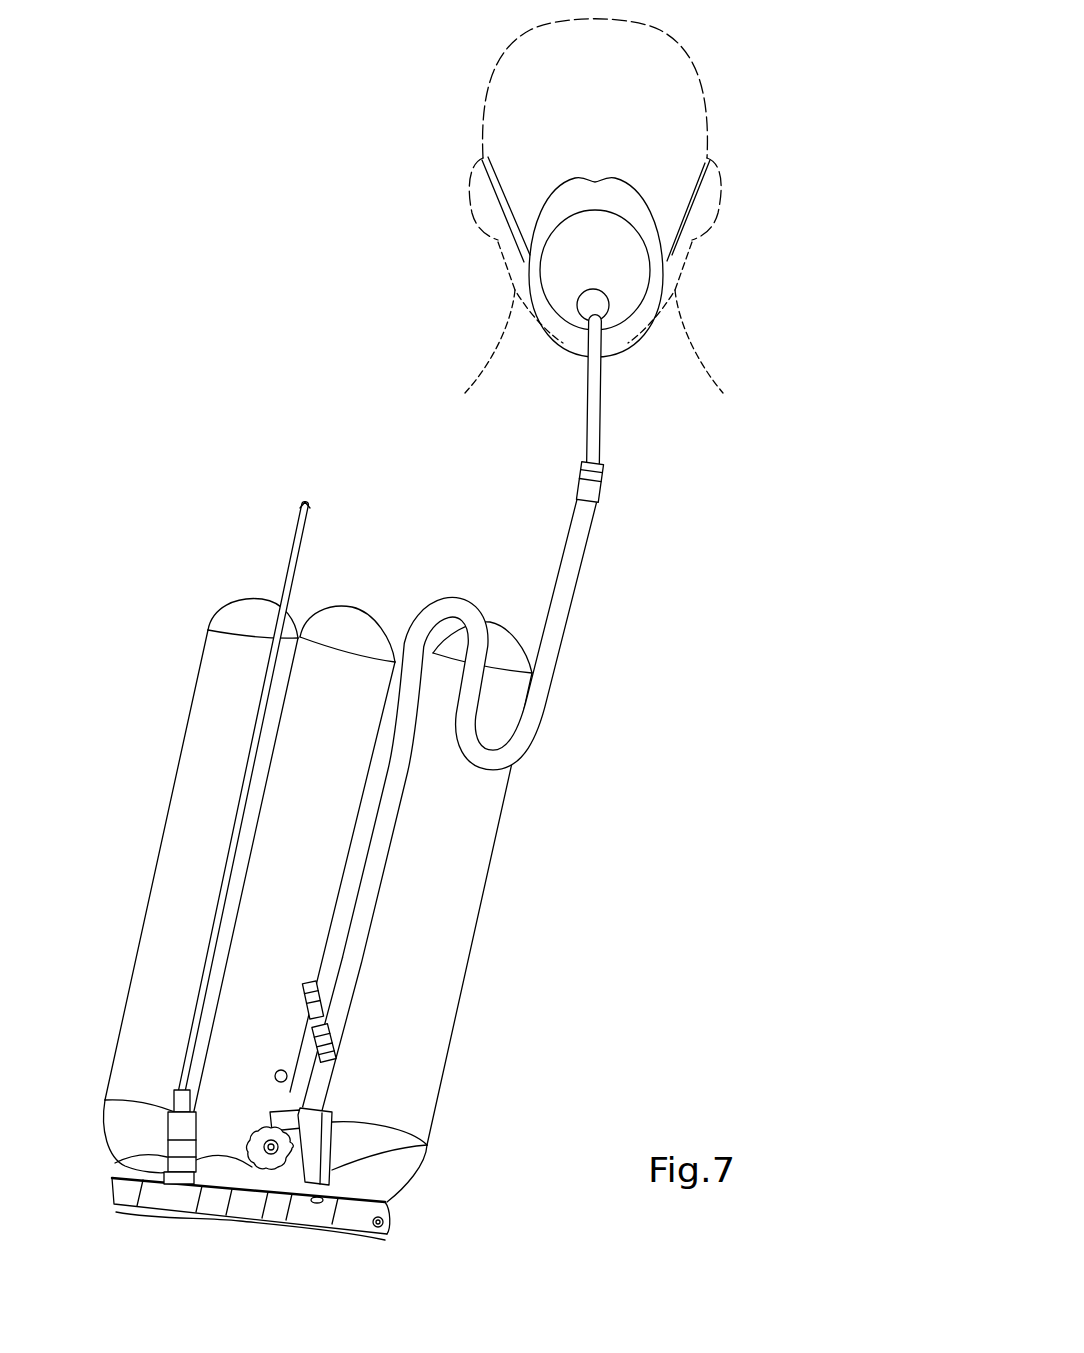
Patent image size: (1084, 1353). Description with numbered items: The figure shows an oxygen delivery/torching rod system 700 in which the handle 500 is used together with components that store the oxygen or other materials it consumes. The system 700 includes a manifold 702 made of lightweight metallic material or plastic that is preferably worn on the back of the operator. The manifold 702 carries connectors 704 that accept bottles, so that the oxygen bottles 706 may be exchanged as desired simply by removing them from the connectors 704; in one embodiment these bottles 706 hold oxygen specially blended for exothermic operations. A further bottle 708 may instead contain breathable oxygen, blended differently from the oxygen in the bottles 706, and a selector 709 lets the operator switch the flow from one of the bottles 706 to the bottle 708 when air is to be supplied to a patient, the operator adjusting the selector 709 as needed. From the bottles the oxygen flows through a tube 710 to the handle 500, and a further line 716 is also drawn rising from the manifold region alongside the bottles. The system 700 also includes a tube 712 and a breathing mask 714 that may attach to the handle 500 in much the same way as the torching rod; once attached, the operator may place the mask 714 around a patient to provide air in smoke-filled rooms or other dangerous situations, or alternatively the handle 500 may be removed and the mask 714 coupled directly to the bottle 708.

The oxygen delivery/torching rod system 700 is at (330, 397).
The manifold 702 is at (182, 1222).
The connectors 704 is at (114, 1173).
The oxygen bottles 706 is at (170, 806).
The bottle 708 is at (364, 609).
The selector 709 is at (338, 1167).
The tube 710 is at (577, 593).
The tube 712 is at (605, 414).
The breathing mask 714 is at (667, 279).
The gauge tube 716 is at (290, 568).
The handle 500 is at (602, 490).